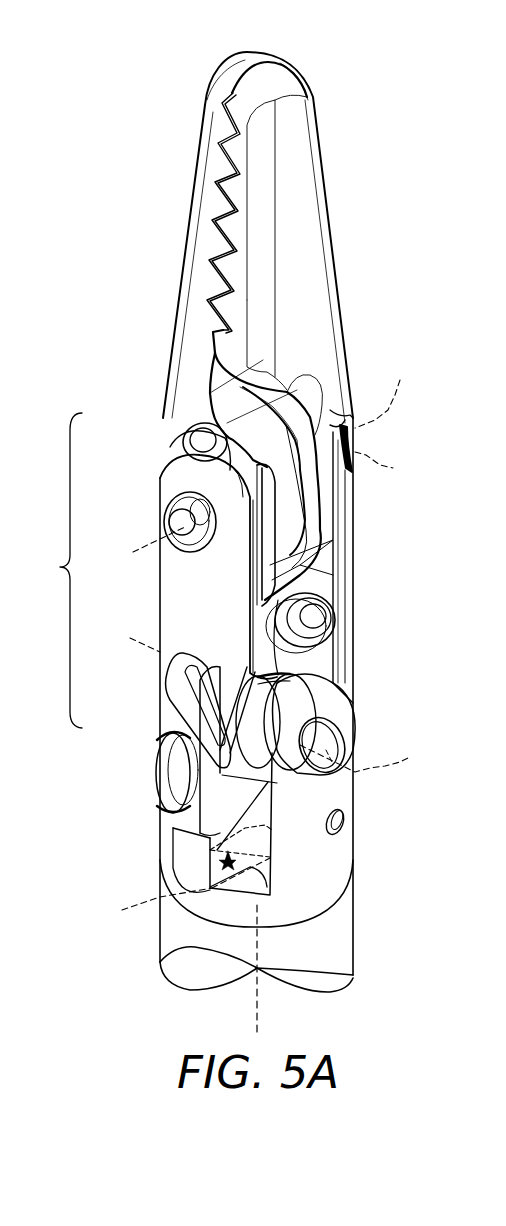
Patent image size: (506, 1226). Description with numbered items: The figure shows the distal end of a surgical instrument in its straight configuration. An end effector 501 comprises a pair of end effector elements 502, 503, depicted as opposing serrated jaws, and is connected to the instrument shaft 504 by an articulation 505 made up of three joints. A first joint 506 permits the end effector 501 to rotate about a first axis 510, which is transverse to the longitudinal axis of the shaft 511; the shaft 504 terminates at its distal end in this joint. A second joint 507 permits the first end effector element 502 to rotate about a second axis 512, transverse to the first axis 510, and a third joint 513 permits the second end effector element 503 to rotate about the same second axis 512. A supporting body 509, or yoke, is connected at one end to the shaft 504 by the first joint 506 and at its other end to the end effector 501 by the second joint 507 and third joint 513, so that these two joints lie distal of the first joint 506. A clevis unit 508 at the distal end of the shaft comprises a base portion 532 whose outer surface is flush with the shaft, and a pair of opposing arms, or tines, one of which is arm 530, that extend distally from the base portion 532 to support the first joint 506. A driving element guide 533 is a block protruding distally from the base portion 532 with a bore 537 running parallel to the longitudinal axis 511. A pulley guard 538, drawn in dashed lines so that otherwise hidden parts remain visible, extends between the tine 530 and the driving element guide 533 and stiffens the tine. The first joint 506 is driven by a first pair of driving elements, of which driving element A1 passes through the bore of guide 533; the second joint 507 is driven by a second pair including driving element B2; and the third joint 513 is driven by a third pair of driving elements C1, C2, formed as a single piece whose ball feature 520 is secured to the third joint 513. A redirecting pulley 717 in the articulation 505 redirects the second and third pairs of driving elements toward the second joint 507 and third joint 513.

The end effector 501 is at (318, 58).
The first end effector element 502 is at (297, 152).
The second end effector element 503 is at (212, 203).
The instrument shaft 504 is at (348, 937).
The articulation 505 is at (50, 570).
The first joint 506 is at (338, 733).
The second joint 507 is at (380, 449).
The clevis unit 508 is at (348, 862).
The supporting body 509 is at (165, 606).
The first axis 510 is at (374, 758).
The longitudinal axis of the shaft 511 is at (260, 1018).
The second axis 512 is at (371, 389).
The third joint 513 is at (170, 520).
The ball feature 520 is at (165, 438).
The arm 530 is at (350, 833).
The base portion 532 is at (185, 882).
The driving element guide 533 is at (188, 853).
The bore 537 is at (182, 822).
The pulley guard 538 is at (176, 890).
The redirecting pulley 717 is at (333, 604).
The driving element A1 is at (200, 783).
The driving element B2 is at (348, 540).
The driving element C1 is at (258, 582).
The driving element C2 is at (165, 690).